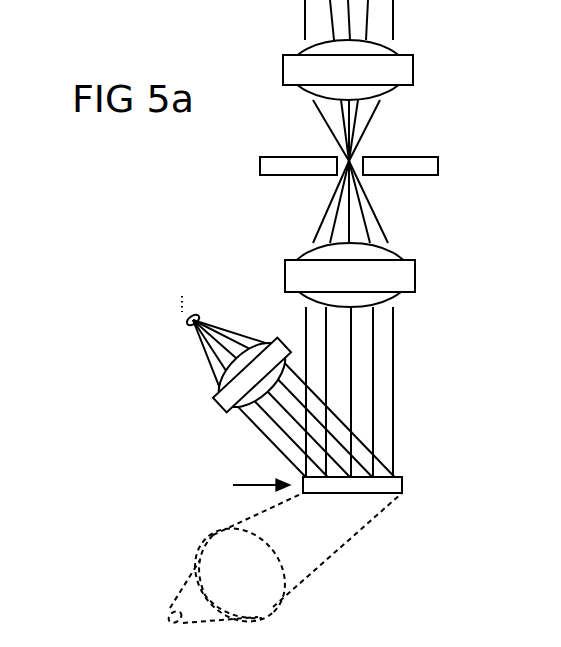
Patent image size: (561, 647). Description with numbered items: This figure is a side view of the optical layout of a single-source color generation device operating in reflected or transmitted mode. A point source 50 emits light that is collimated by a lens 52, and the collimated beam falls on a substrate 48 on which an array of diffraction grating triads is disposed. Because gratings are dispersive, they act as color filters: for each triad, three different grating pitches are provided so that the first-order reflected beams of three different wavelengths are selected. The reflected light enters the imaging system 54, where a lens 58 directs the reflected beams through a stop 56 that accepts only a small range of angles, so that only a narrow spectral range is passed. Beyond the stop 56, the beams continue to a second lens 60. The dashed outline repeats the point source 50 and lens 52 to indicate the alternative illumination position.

The substrate 48 is at (404, 484).
The point source 50 is at (178, 318).
The lens 52 is at (220, 414).
The imaging system 54 is at (100, 200).
The stop 56 is at (258, 163).
The lens 58 is at (404, 272).
The second lens 60 is at (403, 70).